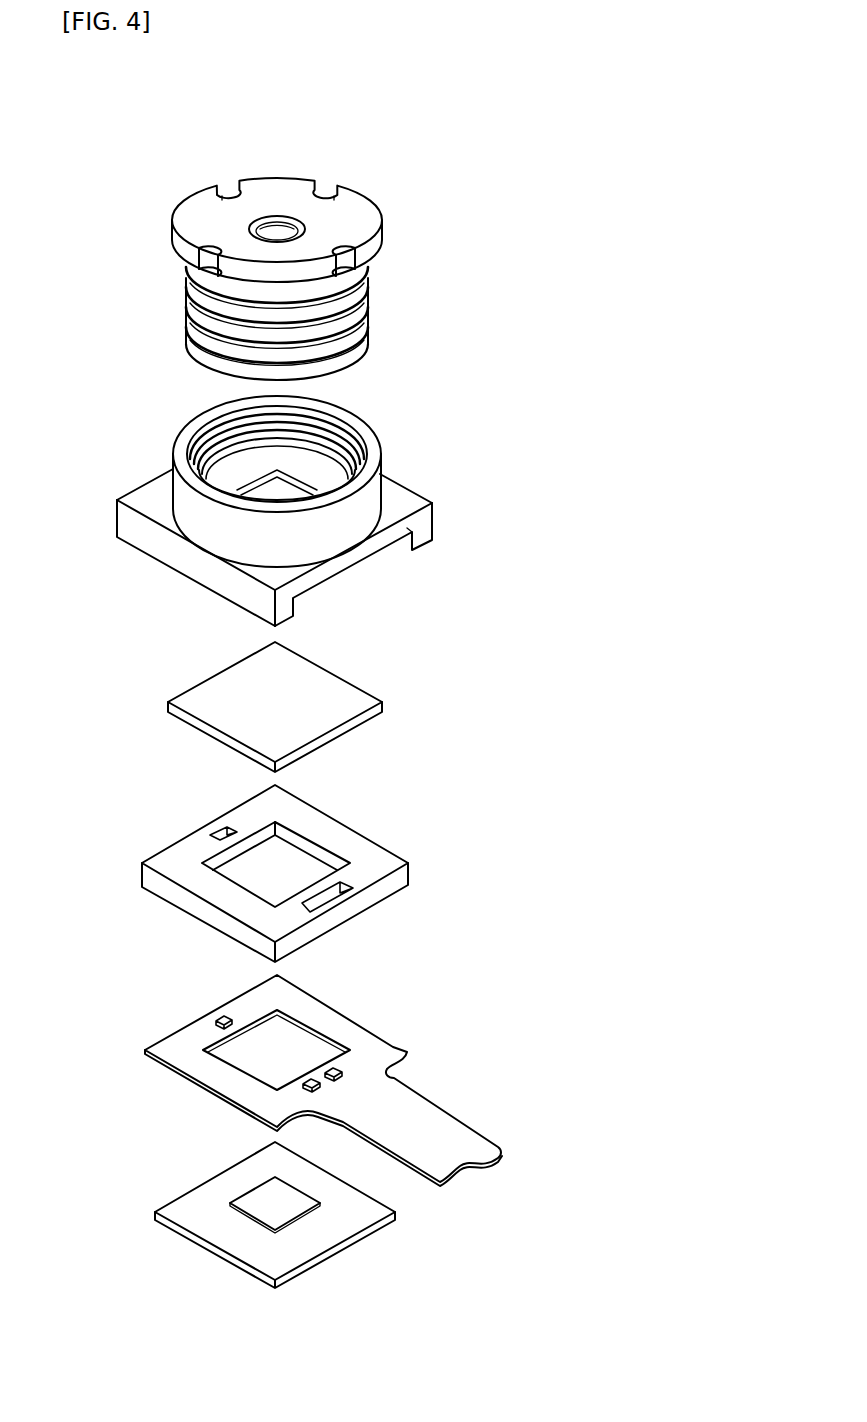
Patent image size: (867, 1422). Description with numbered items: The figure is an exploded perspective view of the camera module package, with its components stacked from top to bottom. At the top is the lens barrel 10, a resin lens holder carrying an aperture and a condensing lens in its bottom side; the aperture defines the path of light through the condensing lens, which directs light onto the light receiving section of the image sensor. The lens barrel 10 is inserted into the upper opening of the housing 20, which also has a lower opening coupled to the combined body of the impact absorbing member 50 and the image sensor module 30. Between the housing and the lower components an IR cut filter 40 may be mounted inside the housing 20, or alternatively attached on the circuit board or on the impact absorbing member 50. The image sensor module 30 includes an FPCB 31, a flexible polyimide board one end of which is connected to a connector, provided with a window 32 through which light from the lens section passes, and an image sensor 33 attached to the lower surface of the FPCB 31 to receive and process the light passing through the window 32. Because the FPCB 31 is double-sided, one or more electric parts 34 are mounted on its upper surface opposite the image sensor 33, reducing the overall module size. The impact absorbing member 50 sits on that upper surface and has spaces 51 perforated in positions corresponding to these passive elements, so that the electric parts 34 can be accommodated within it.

The lens barrel 10 is at (398, 218).
The housing 20 is at (397, 463).
The IR filter 40 is at (360, 662).
The impact absorbing member 50 is at (328, 861).
The spaces 51 is at (223, 831).
The image sensor module 30 is at (108, 922).
The FPCB 31 is at (257, 993).
The window 32 is at (242, 1050).
The image sensor 33 is at (222, 1182).
The electric parts 34 is at (220, 1020).